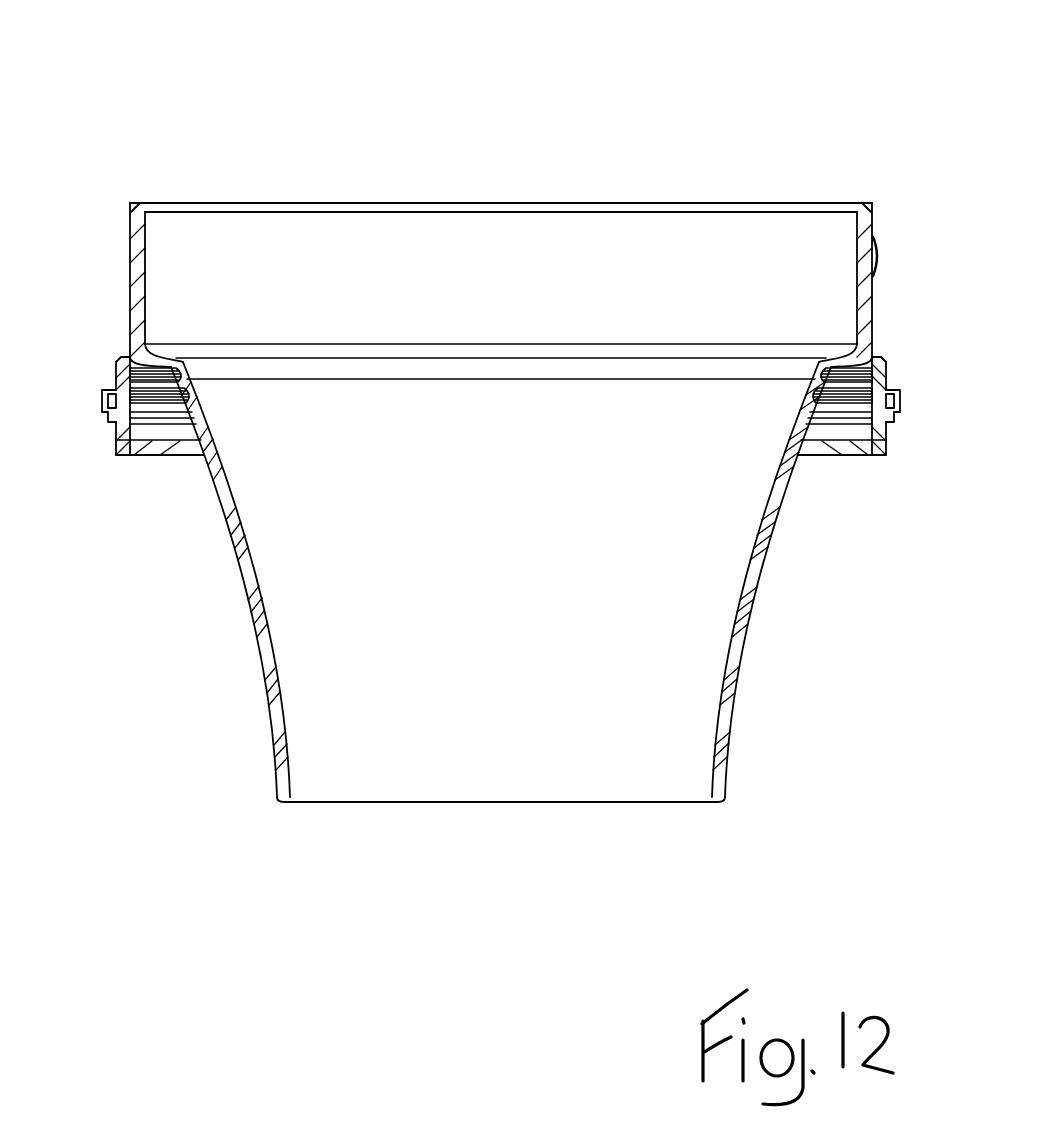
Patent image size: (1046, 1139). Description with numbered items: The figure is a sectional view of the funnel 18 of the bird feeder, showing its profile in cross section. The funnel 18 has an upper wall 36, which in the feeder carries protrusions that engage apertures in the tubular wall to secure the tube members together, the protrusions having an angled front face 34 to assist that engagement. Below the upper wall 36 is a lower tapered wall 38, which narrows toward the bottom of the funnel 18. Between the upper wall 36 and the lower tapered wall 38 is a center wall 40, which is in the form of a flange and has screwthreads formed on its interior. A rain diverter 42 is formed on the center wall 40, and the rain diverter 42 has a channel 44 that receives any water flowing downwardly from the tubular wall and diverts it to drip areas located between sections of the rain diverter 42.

The funnel 18 is at (747, 88).
The angled front face 34 is at (876, 243).
The upper wall 36 is at (862, 316).
The lower tapered wall 38 is at (735, 657).
The center wall 40 is at (878, 384).
The rain diverter 42 is at (900, 420).
The channel 44 is at (117, 380).